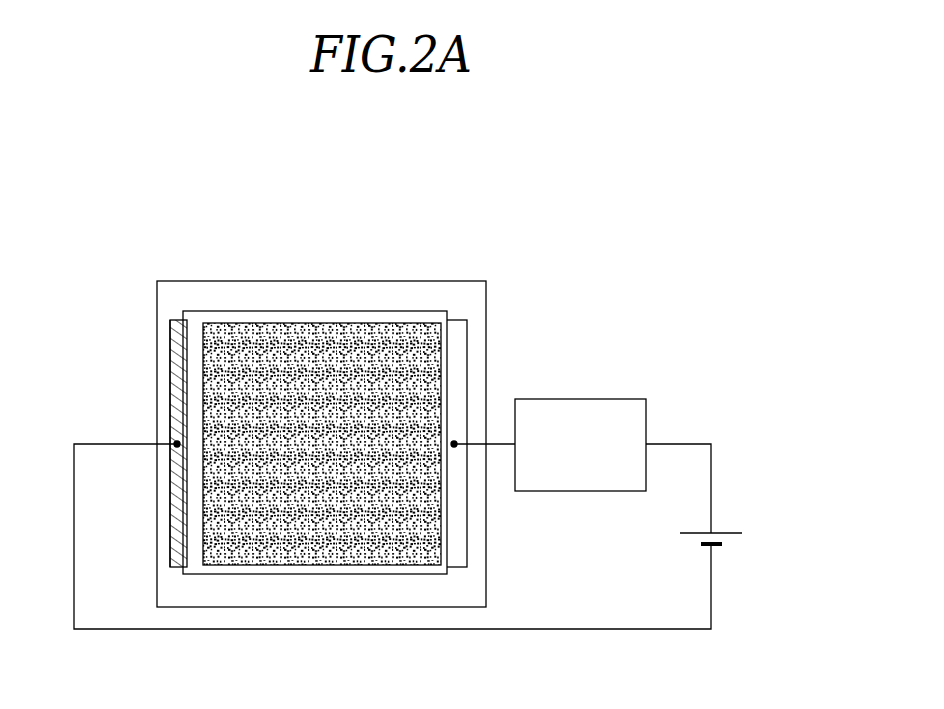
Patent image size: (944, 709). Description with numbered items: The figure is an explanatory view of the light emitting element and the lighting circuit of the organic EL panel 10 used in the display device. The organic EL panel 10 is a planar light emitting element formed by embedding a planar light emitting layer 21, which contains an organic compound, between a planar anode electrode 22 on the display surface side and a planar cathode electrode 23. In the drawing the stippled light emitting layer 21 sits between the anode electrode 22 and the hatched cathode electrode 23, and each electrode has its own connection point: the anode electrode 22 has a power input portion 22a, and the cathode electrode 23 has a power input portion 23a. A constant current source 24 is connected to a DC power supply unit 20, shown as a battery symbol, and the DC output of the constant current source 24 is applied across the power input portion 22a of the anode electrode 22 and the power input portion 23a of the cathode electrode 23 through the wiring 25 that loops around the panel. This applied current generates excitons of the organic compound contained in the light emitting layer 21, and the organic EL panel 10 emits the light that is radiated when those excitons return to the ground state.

The organic EL panel 10 is at (478, 272).
The DC power supply unit 20 is at (725, 526).
The light emitting layer 21 is at (380, 323).
The anode electrode 22 is at (290, 320).
The power input portion 22a is at (453, 518).
The cathode electrode 23 is at (195, 318).
The power input portion 23a is at (169, 545).
The constant current source 24 is at (605, 399).
The wiring / circuit 25 is at (341, 595).